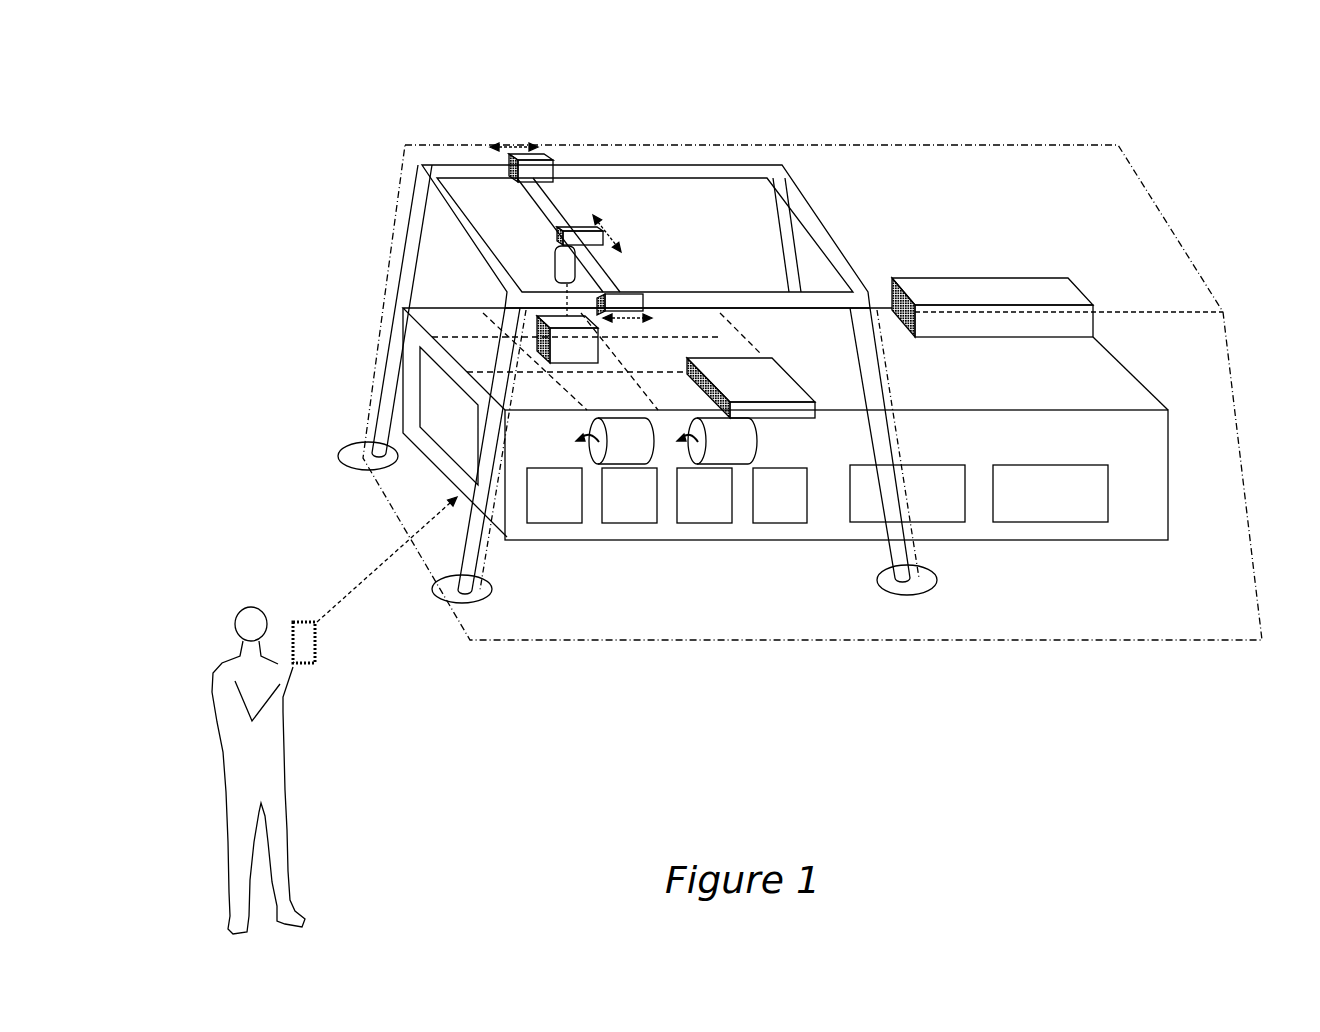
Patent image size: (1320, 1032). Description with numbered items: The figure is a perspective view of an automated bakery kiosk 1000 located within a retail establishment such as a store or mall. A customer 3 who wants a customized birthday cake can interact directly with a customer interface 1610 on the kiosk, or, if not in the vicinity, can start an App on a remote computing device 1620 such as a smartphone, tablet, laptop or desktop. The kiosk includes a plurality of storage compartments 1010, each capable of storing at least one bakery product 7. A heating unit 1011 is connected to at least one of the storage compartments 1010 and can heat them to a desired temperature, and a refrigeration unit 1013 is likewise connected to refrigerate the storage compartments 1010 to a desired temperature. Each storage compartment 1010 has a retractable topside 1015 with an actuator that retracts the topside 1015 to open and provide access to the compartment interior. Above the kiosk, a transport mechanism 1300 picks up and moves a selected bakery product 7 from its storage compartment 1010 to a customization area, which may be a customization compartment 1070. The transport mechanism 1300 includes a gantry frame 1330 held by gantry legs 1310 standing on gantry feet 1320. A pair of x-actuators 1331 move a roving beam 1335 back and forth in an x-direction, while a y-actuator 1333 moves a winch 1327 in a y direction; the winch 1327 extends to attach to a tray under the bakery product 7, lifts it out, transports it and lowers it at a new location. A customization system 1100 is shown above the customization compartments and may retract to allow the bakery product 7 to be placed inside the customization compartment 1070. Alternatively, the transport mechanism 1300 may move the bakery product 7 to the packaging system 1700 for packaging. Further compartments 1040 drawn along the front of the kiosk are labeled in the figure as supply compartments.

The automated bakery kiosk 1000 is at (785, 278).
The transport mechanism 1300 is at (817, 159).
The gantry frame 1330 is at (818, 224).
The gantry leg 1310 is at (403, 280).
The gantry foot 1320 is at (347, 458).
The roving beam 1335 is at (540, 200).
The x-actuator 1331 is at (540, 153).
The y-actuator 1333 is at (604, 238).
The winch 1327 is at (576, 270).
The packaging system 1700 is at (992, 307).
The retractable topside 1015 is at (596, 361).
The bakery product 7 is at (620, 339).
The customization system 1100 is at (798, 388).
The heating unit 1011 is at (559, 431).
The refrigeration unit 1013 is at (796, 441).
The customer interface 1610 is at (392, 490).
The storage compartment 1010 is at (693, 517).
The customization compartment 1070 is at (773, 547).
The supply compartments 1040 is at (1042, 560).
The remote computing device 1620 is at (293, 642).
The customer 3 is at (258, 770).